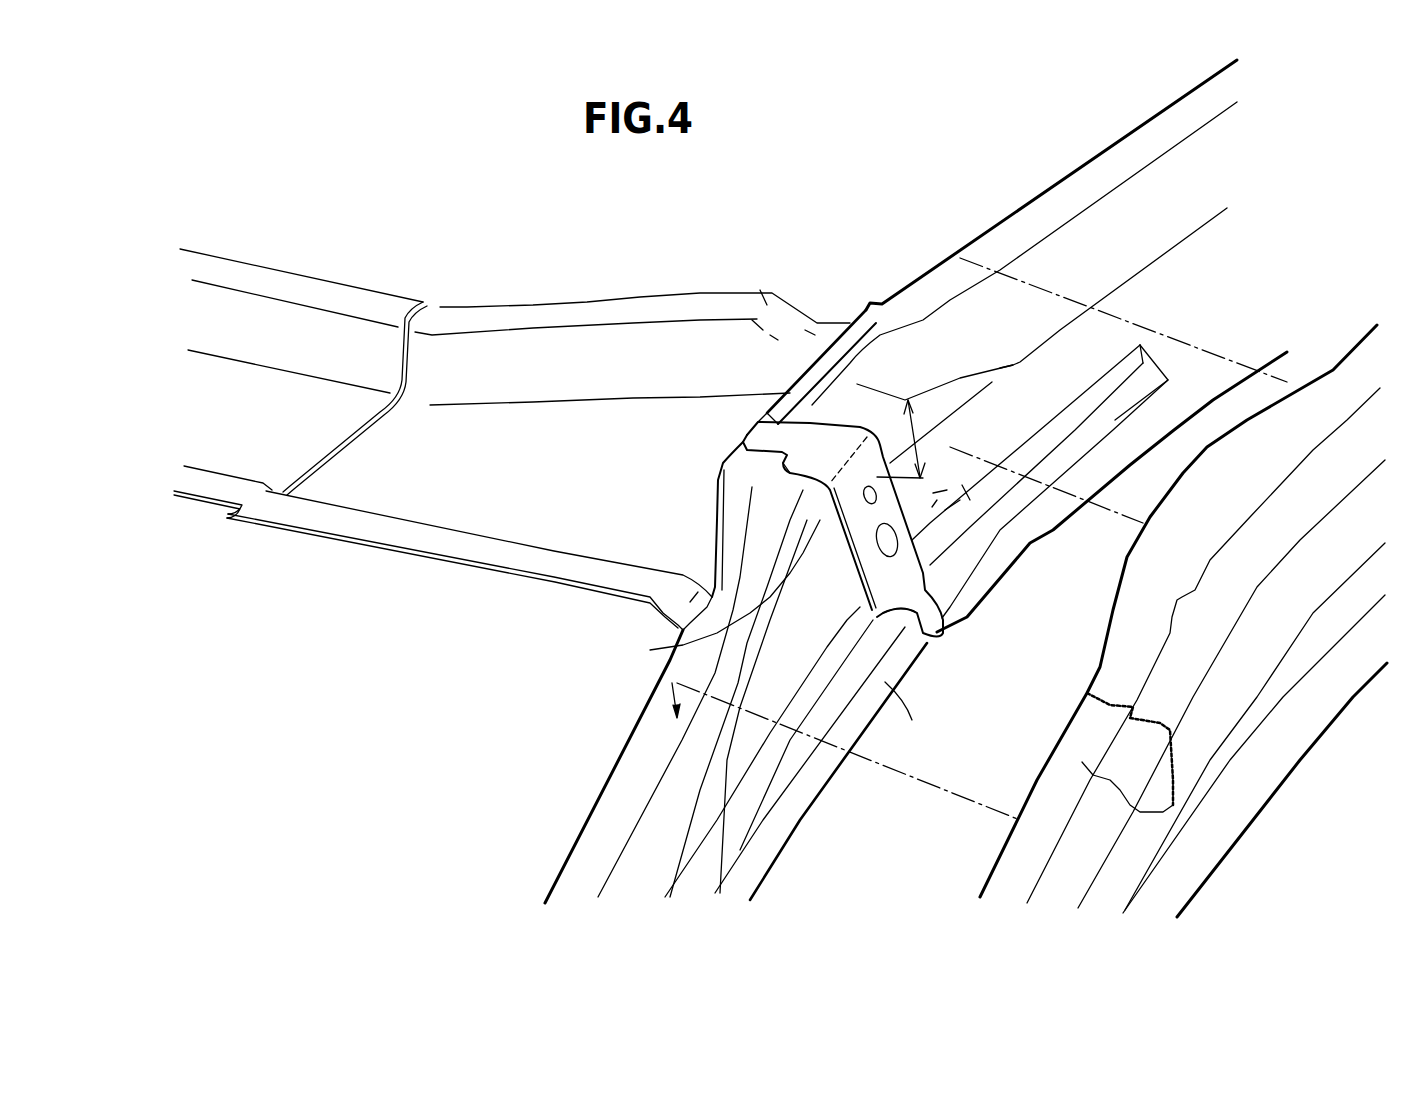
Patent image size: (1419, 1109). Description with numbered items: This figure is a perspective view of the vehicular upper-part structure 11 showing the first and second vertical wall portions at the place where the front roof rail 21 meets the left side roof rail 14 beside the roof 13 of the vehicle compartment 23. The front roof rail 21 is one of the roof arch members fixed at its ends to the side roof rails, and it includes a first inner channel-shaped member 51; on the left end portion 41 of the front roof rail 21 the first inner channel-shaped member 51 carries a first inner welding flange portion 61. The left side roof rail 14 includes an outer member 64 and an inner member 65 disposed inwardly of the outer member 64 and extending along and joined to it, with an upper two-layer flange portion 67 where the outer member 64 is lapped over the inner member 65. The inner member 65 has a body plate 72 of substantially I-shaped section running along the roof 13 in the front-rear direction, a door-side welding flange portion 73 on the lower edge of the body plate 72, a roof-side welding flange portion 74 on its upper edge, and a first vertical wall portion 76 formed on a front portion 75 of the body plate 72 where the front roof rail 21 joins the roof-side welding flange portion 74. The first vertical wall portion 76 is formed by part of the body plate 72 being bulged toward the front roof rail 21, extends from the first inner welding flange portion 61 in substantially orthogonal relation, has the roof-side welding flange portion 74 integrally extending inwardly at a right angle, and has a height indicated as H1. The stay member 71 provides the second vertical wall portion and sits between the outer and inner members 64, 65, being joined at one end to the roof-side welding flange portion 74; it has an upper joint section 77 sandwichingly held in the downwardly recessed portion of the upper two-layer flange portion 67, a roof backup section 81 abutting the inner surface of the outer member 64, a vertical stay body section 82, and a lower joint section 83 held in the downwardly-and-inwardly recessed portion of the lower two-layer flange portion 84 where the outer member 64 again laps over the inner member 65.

The vehicular upper-part structure 11 is at (800, 255).
The roof 13 is at (498, 210).
The left side roof rail 14 is at (1040, 130).
The front roof rail 21 is at (320, 237).
The vehicle compartment 23 is at (362, 768).
The left end portion 41 is at (703, 480).
The first inner channel-shaped member 51 is at (464, 478).
The first inner welding flange portion 61 is at (968, 485).
The outer member 64 is at (1320, 540).
The inner member 65 is at (1100, 250).
The upper two-layer flange portion 67 is at (960, 290).
The second vertical wall portion 71 is at (883, 413).
The body plate 72 is at (1193, 287).
The door-side welding flange portion 73 is at (916, 712).
The roof-side welding flange portion 74 is at (882, 440).
The front portion 75 is at (850, 550).
The first vertical wall portion 76 is at (683, 630).
The upper joint section 77 is at (765, 418).
The roof backup section 81 is at (830, 447).
The vertical stay body section 82 is at (820, 619).
The lower joint section 83 is at (923, 615).
The lower two-layer flange portion 84 is at (995, 582).
The height dimension H1 is at (1042, 344).